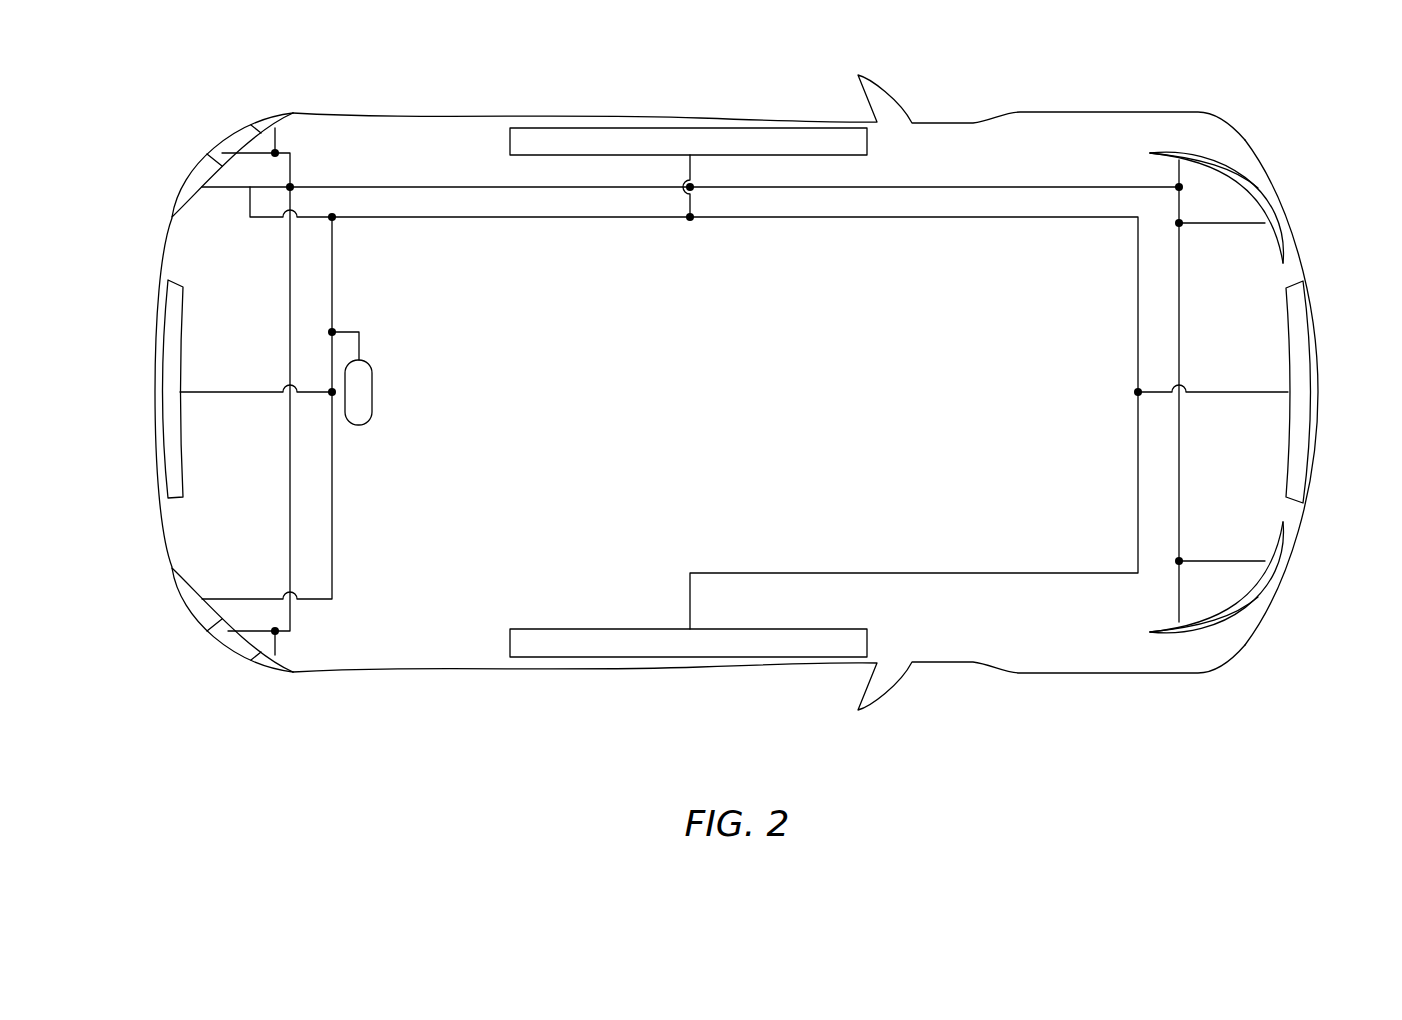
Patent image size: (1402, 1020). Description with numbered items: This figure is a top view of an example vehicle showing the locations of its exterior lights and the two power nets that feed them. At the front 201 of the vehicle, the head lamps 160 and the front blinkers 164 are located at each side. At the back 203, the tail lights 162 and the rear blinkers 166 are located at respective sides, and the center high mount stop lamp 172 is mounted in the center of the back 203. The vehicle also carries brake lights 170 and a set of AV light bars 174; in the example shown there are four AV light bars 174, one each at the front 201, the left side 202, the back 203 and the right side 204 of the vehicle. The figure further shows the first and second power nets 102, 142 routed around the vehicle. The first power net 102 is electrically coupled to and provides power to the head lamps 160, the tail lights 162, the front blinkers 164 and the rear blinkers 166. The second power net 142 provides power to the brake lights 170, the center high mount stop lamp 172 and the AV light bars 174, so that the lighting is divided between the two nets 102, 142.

The first power net 102 is at (433, 187).
The second power net 142 is at (573, 217).
The head lamps 160 is at (1273, 200).
The tail lights 162 is at (222, 135).
The front blinkers 164 is at (1212, 153).
The rear blinkers 166 is at (273, 112).
The brake lights 170 is at (188, 177).
The center high mount stop lamp (CHMSL) 172 is at (373, 400).
The AV light bars 174 is at (595, 128).
The front 201 is at (1318, 425).
The left side 202 is at (1060, 112).
The back 203 is at (157, 363).
The right side 204 is at (1060, 672).